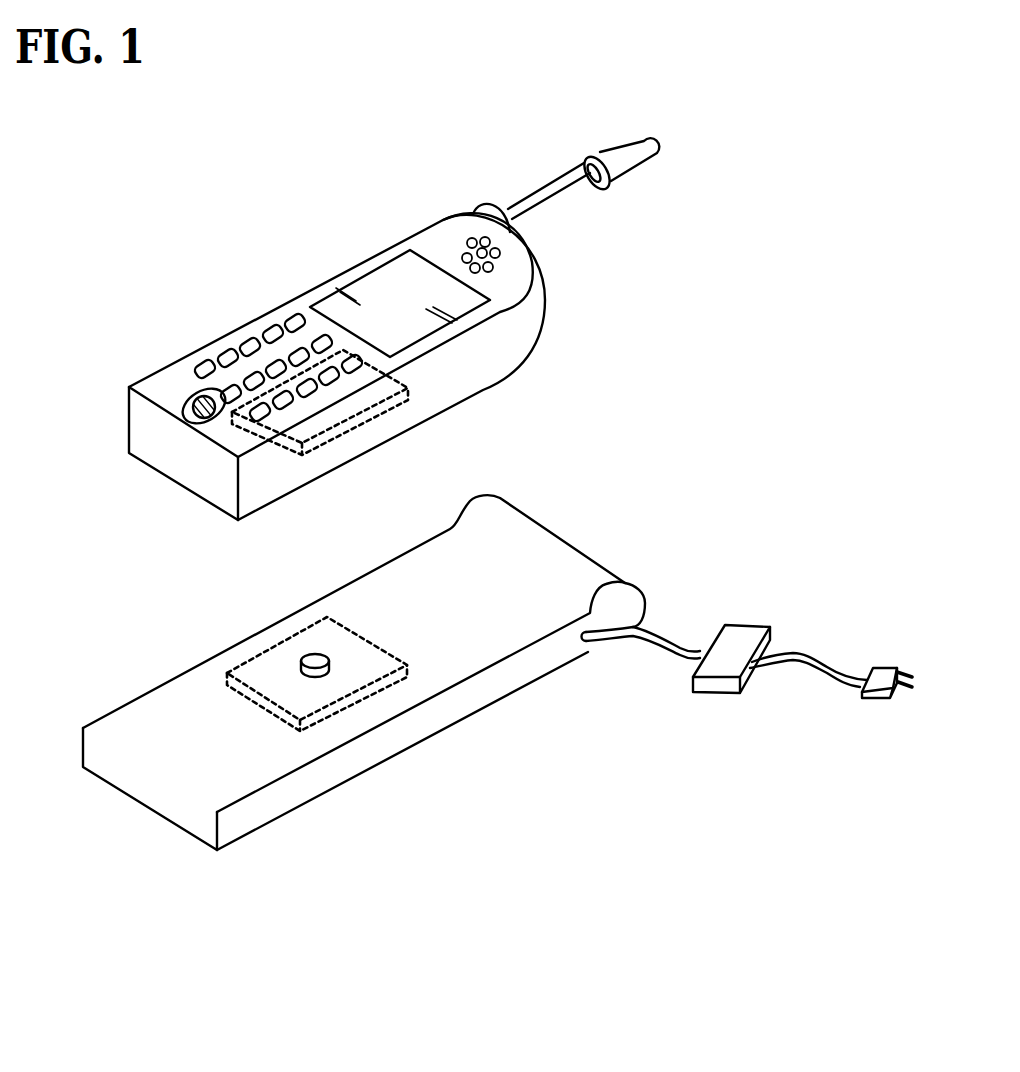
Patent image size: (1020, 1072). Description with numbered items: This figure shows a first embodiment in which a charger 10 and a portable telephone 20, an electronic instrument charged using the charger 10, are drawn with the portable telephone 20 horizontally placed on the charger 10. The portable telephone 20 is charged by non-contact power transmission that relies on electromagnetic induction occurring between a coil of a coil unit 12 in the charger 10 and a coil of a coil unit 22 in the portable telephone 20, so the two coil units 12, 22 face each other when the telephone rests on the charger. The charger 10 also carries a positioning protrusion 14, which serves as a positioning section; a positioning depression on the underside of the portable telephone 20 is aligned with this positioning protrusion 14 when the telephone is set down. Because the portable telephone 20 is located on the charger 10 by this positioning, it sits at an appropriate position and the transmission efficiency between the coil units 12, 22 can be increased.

The charger 10 is at (250, 818).
The coil unit 12 is at (333, 712).
The positioning protrusion 14 is at (329, 667).
The portable telephone 20 is at (351, 270).
The coil unit 22 is at (383, 415).